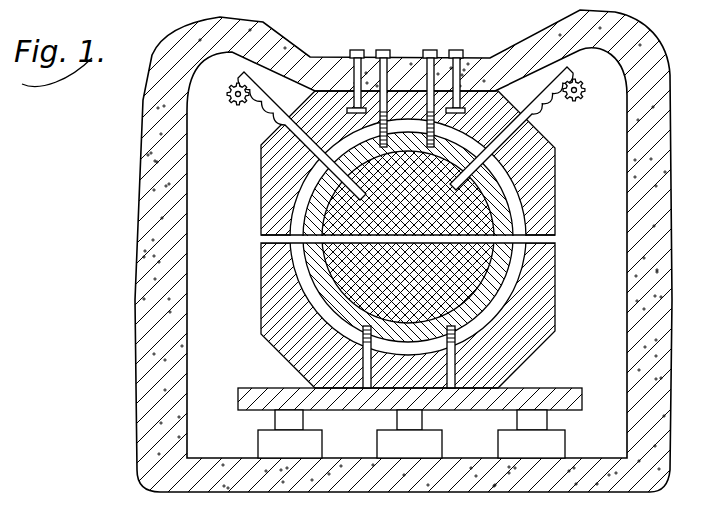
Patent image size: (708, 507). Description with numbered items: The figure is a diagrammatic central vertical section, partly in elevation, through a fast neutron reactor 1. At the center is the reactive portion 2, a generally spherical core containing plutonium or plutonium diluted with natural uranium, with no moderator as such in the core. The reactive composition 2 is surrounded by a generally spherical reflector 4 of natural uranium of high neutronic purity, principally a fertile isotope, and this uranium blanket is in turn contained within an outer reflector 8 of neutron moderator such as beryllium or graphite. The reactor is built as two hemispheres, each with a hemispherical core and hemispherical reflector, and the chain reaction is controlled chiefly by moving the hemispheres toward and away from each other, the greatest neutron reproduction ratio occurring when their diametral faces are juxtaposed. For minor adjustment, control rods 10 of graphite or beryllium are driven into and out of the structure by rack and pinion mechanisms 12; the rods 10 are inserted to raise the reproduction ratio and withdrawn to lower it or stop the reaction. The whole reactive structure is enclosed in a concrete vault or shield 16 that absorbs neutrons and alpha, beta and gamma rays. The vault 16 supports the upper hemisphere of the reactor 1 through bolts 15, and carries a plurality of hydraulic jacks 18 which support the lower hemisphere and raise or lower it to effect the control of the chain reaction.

The fast neutron reactor 1 is at (347, 220).
The reactive portion 2 is at (467, 221).
The reflector 4 is at (317, 193).
The reflector 8 is at (275, 334).
The control rods 10 is at (273, 113).
The rack and pinion mechanisms 12 is at (229, 101).
The bolts 15 is at (430, 48).
The concrete vault or shield 16 is at (143, 148).
The hydraulic jacks 18 is at (273, 442).